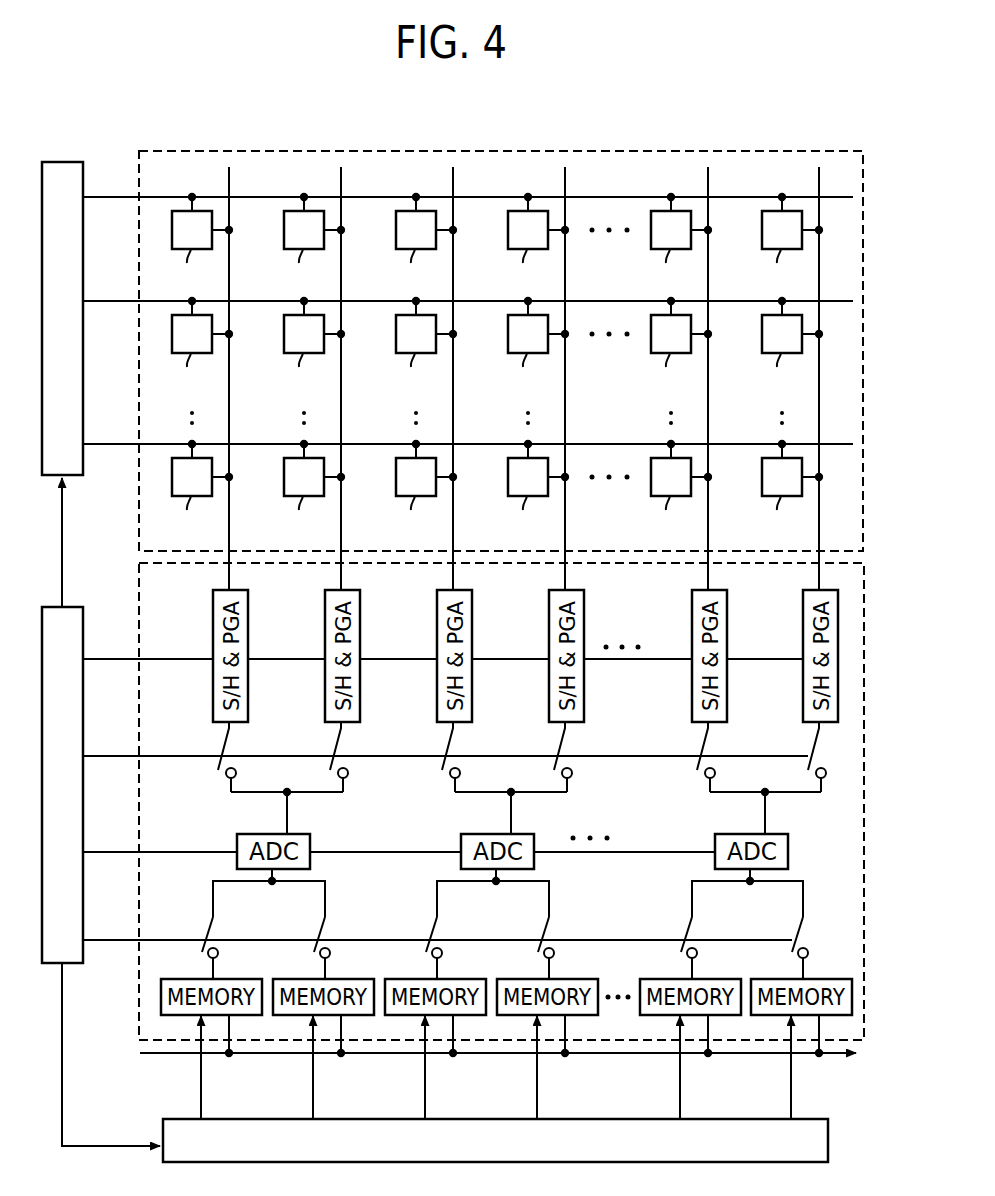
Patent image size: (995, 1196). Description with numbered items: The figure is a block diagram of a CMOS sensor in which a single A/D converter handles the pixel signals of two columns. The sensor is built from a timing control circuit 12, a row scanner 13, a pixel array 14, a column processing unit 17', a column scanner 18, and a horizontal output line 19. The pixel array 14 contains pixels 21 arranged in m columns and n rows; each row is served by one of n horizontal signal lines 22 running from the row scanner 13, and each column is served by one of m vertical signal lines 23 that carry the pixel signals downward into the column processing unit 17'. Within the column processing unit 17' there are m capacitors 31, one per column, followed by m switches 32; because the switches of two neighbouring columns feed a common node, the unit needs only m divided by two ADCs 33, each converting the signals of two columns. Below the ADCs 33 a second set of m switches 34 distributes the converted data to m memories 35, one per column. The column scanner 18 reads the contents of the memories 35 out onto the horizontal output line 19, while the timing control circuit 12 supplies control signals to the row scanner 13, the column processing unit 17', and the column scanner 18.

The timing control circuit 12 is at (83, 955).
The row scanner 13 is at (61, 162).
The pixel array 14 is at (380, 150).
The column processing unit 17' is at (474, 801).
The column scanner 18 is at (730, 1119).
The horizontal output line 19 is at (589, 1056).
The pixel 21 is at (495, 368).
The horizontal signal line 22 is at (110, 201).
The vertical signal line 23 is at (229, 178).
The capacitor 31 is at (213, 618).
The switch 32 is at (214, 745).
The ADC 33 is at (237, 840).
The switch 34 is at (202, 932).
The memory 35 is at (240, 970).